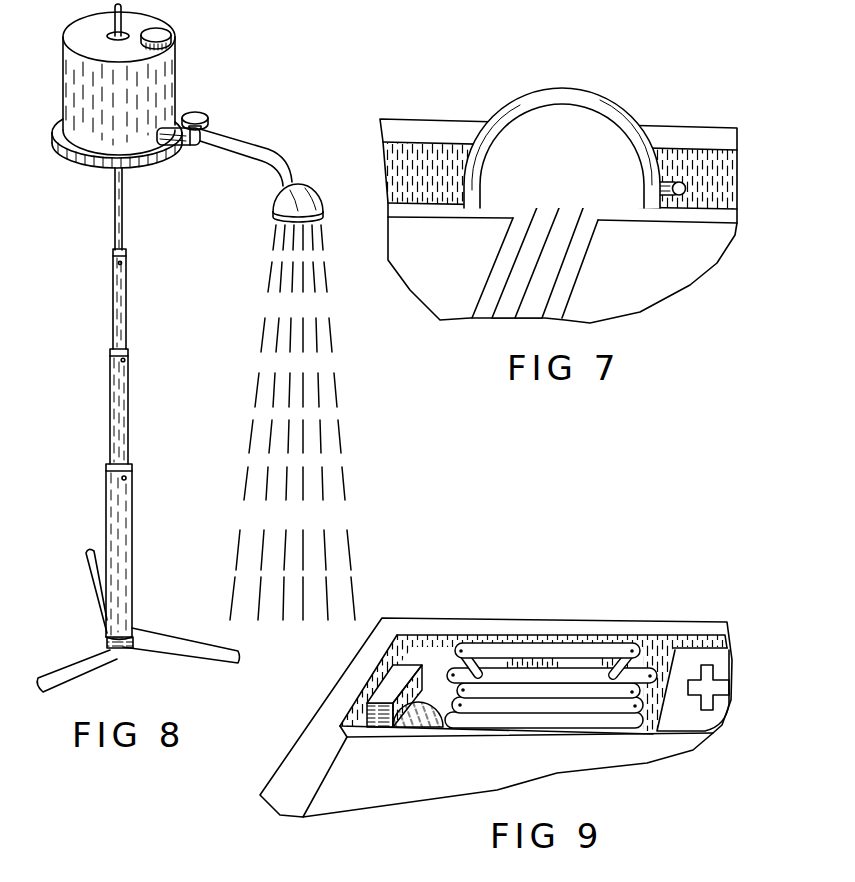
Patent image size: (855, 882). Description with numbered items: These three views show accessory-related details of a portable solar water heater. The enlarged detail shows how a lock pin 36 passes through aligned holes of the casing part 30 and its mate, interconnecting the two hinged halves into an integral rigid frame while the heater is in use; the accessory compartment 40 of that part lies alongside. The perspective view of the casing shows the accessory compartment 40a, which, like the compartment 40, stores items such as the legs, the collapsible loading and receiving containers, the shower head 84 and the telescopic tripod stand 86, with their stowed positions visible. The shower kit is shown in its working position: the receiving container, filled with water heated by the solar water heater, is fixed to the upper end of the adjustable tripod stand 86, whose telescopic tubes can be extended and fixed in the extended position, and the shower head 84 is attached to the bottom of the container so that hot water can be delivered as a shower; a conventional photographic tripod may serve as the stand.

In FIG. 9, the casing part 30 is at (558, 632).
In FIG. 7, the lock pin 36 is at (662, 195).
In FIG. 7, the accessory compartment 40 is at (435, 165).
In FIG. 9, the accessory compartment 40 is at (417, 652).
In FIG. 7, the accessory compartment 40a is at (697, 170).
In FIG. 8, the shower head 84 is at (307, 195).
In FIG. 8, the telescopic tripod stand 86 is at (123, 374).